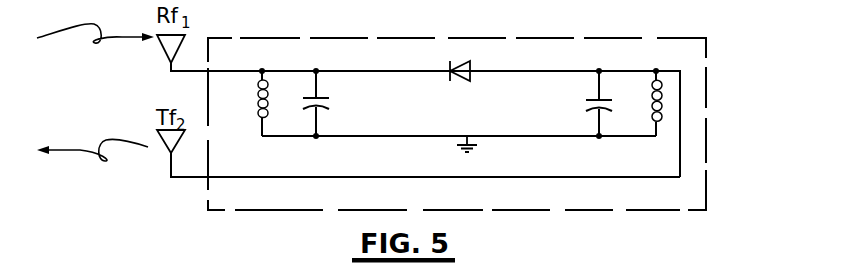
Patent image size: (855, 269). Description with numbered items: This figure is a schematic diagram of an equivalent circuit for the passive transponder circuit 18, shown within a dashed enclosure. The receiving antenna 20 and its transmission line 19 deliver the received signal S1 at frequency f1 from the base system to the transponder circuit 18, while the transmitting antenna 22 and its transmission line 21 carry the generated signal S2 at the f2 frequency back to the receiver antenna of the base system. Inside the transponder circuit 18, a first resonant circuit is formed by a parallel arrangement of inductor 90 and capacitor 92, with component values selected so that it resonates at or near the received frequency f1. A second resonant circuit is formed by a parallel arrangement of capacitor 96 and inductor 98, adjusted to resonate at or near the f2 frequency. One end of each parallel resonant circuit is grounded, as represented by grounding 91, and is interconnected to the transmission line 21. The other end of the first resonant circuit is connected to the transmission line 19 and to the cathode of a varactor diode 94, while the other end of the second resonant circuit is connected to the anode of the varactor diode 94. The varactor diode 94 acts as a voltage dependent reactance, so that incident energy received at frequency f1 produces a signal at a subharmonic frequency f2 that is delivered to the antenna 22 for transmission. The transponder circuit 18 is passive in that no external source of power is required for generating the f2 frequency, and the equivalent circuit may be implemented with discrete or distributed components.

The transponder circuit 18 is at (707, 108).
The transmission line 19 is at (172, 68).
The antenna 20 is at (158, 47).
The transmission line 21 is at (170, 180).
The antenna 22 is at (168, 147).
The inductor 90 is at (260, 127).
The grounding 91 is at (470, 139).
The capacitor 92 is at (320, 88).
The varactor diode 94 is at (468, 81).
The capacitor 96 is at (597, 89).
The inductor 98 is at (657, 126).